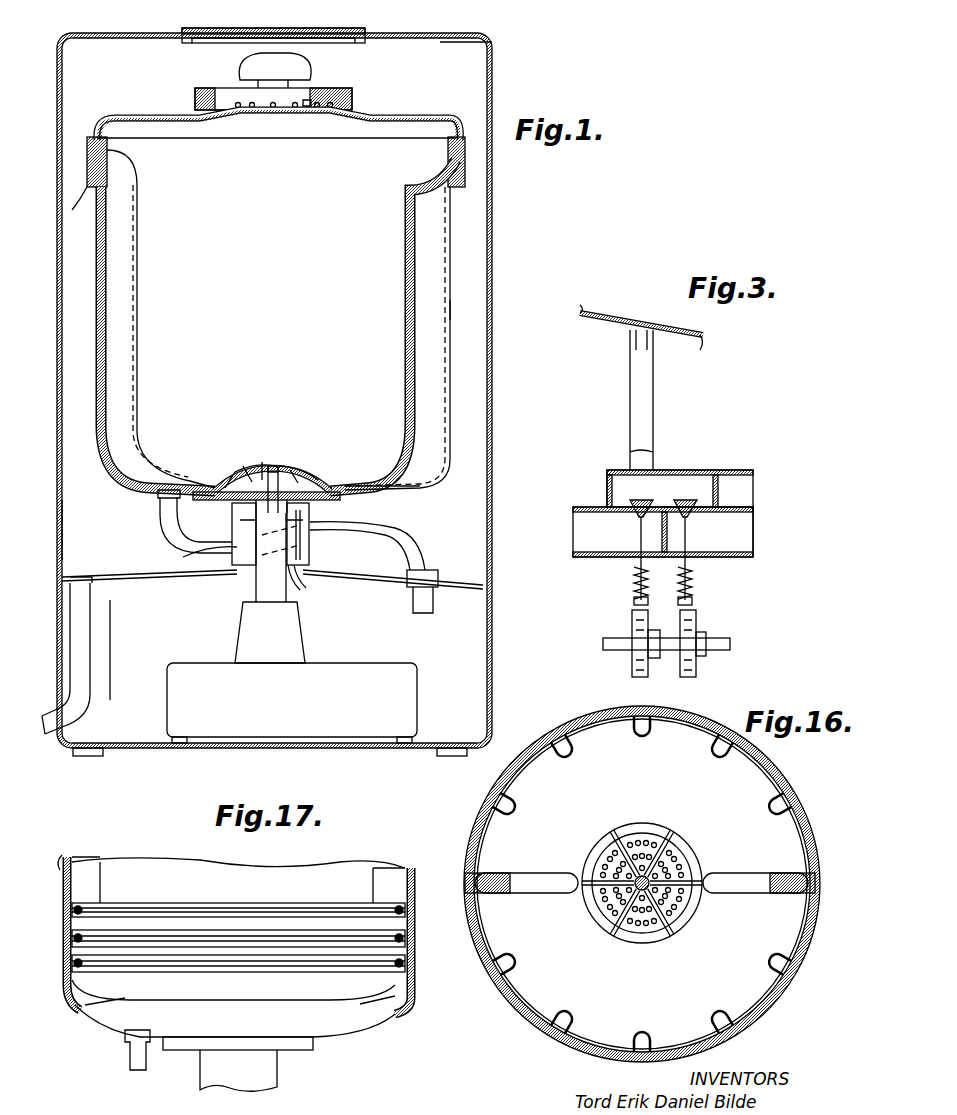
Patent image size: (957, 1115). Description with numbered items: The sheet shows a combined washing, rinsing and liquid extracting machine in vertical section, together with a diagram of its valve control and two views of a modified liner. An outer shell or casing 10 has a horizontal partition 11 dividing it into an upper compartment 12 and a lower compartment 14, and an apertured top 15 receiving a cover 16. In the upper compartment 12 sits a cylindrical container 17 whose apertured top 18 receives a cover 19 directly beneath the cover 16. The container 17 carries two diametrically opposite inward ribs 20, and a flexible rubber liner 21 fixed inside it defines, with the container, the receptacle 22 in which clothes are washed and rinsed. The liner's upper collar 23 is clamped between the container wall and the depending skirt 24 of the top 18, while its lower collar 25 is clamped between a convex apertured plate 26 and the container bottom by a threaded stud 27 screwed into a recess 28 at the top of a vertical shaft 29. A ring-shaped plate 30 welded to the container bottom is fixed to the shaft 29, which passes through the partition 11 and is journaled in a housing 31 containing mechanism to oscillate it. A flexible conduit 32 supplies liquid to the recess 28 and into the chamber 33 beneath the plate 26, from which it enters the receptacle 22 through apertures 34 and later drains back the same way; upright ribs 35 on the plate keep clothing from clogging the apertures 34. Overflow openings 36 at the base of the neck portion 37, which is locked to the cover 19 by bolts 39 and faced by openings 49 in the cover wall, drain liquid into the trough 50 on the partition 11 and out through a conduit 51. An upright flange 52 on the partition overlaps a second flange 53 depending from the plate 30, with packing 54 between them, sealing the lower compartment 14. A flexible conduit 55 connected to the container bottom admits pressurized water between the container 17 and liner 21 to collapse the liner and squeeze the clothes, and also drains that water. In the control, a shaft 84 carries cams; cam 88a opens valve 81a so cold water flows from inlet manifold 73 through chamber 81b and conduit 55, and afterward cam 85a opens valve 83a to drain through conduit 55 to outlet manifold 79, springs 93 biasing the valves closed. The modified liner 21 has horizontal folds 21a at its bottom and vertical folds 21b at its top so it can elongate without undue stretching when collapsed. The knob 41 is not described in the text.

In FIG. 1, the outer shell or casing 10 is at (490, 257).
In FIG. 17, the outer shell or casing 10 is at (62, 858).
In FIG. 1, the partition 11 is at (133, 577).
In FIG. 1, the upper compartment 12 is at (82, 523).
In FIG. 1, the lower compartment 14 is at (126, 650).
In FIG. 1, the apertured top 15 is at (455, 37).
In FIG. 1, the cover or lid 16 is at (330, 34).
In FIG. 1, the container or shell 17 is at (450, 322).
In FIG. 3, the container or shell 17 is at (695, 345).
In FIG. 16, the container or shell 17 is at (810, 800).
In FIG. 17, the container or shell 17 is at (395, 1020).
In FIG. 1, the apertured top 18 is at (400, 117).
In FIG. 1, the lid or cover 19 is at (274, 108).
In FIG. 1, the ribs or vanes 20 is at (135, 328).
In FIG. 16, the ribs or vanes 20 is at (798, 880).
In FIG. 17, the ribs or vanes 20 is at (100, 888).
In FIG. 1, the flexible liner 21 is at (105, 370).
In FIG. 3, the flexible liner 21 is at (695, 322).
In FIG. 16, the flexible liner 21 is at (478, 845).
In FIG. 17, the flexible liner 21 is at (105, 860).
In FIG. 17, the horizontally disposed folds 21a is at (208, 958).
In FIG. 16, the vertically disposed folds 21b is at (565, 745).
In FIG. 1, the receptacle 22 is at (212, 314).
In FIG. 1, the enlarged collar 23 is at (108, 158).
In FIG. 1, the flange or skirt 24 is at (98, 175).
In FIG. 1, the collar 25 is at (360, 488).
In FIG. 1, the plate 26 is at (302, 485).
In FIG. 16, the plate 26 is at (645, 943).
In FIG. 1, the threaded cap or stud 27 is at (292, 470).
In FIG. 16, the threaded cap or stud 27 is at (630, 890).
In FIG. 1, the recess or chamber 28 is at (262, 508).
In FIG. 1, the vertical shaft 29 is at (258, 586).
In FIG. 17, the vertical shaft 29 is at (262, 1075).
In FIG. 1, the ring-shaped plate 30 is at (322, 513).
In FIG. 17, the ring-shaped plate 30 is at (315, 1046).
In FIG. 1, the housing 31 is at (337, 675).
In FIG. 1, the conduit 32 is at (306, 588).
In FIG. 1, the chamber 33 is at (248, 475).
In FIG. 1, the apertures 34 is at (230, 478).
In FIG. 16, the apertures 34 is at (600, 865).
In FIG. 1, the upright ribs 35 is at (300, 470).
In FIG. 16, the upright ribs 35 is at (672, 847).
In FIG. 1, the overflow openings 36 is at (332, 108).
In FIG. 1, the neck portion 37 is at (352, 104).
In FIG. 1, the locking bolts 39 is at (226, 96).
In FIG. 1, the knob 41 is at (255, 55).
In FIG. 1, the openings 49 is at (318, 97).
In FIG. 1, the trough 50 is at (98, 583).
In FIG. 1, the conduit 51 is at (80, 680).
In FIG. 1, the upright flange 52 is at (305, 555).
In FIG. 1, the second flange 53 is at (320, 545).
In FIG. 1, the packing 54 is at (237, 540).
In FIG. 1, the liquid supply conduit 55 is at (427, 555).
In FIG. 3, the liquid supply conduit 55 is at (635, 380).
In FIG. 17, the liquid supply conduit 55 is at (130, 1056).
In FIG. 3, the inlet manifold 73 is at (730, 532).
In FIG. 3, the outlet manifold 79 is at (590, 533).
In FIG. 3, the valve 81a is at (690, 500).
In FIG. 3, the chamber 81b is at (663, 487).
In FIG. 3, the valve 83a is at (630, 500).
In FIG. 3, the shaft 84 is at (735, 643).
In FIG. 3, the cam 85a is at (632, 620).
In FIG. 3, the cam 88a is at (700, 618).
In FIG. 3, the resilient means 93 is at (680, 588).